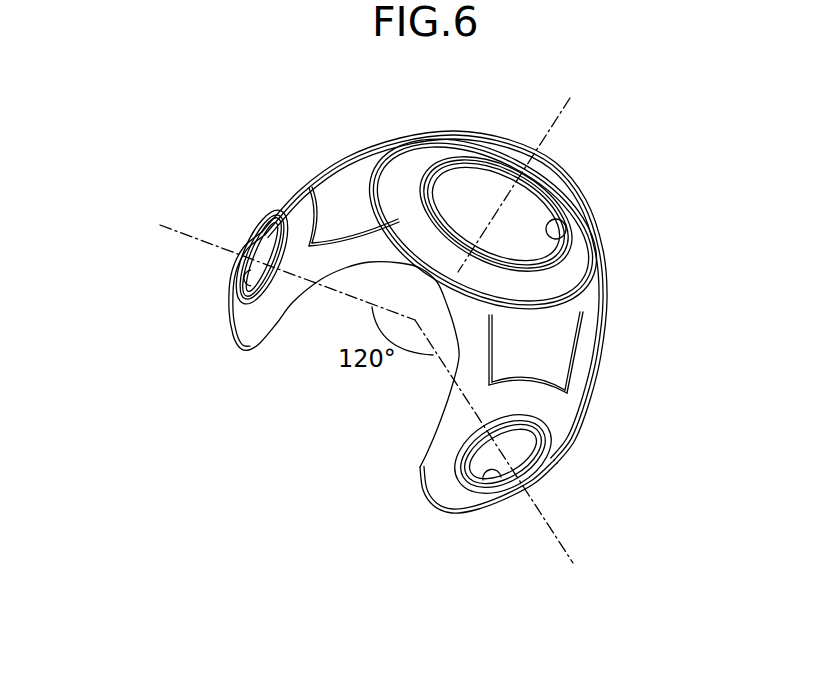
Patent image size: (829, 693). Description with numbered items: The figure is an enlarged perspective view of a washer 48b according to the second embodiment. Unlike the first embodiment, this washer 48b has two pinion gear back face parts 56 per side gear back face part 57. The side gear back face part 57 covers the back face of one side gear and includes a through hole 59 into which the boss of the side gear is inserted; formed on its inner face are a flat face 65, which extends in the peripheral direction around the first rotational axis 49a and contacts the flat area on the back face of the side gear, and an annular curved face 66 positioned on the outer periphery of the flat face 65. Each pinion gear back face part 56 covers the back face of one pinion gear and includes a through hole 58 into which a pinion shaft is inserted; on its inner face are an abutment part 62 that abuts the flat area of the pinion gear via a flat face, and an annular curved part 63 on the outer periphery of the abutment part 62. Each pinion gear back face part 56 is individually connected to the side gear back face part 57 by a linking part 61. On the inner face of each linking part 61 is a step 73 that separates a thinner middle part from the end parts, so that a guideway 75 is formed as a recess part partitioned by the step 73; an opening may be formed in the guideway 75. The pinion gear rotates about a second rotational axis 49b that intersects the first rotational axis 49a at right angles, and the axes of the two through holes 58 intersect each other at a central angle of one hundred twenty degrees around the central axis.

The washer 48b is at (646, 205).
The first rotational axis 49a is at (553, 127).
The second rotational axis 49b is at (187, 233).
The pinion gear back face part 56 is at (227, 333).
The side gear back face part 57 is at (487, 150).
The through hole 58 is at (237, 290).
The through hole 59 is at (565, 236).
The linking part 61 is at (328, 161).
The abutment part 62 is at (250, 270).
The curved part 63 is at (252, 335).
The flat face 65 is at (570, 269).
The curved face 66 is at (551, 298).
The step 73 is at (312, 220).
The guideway 75 is at (361, 217).